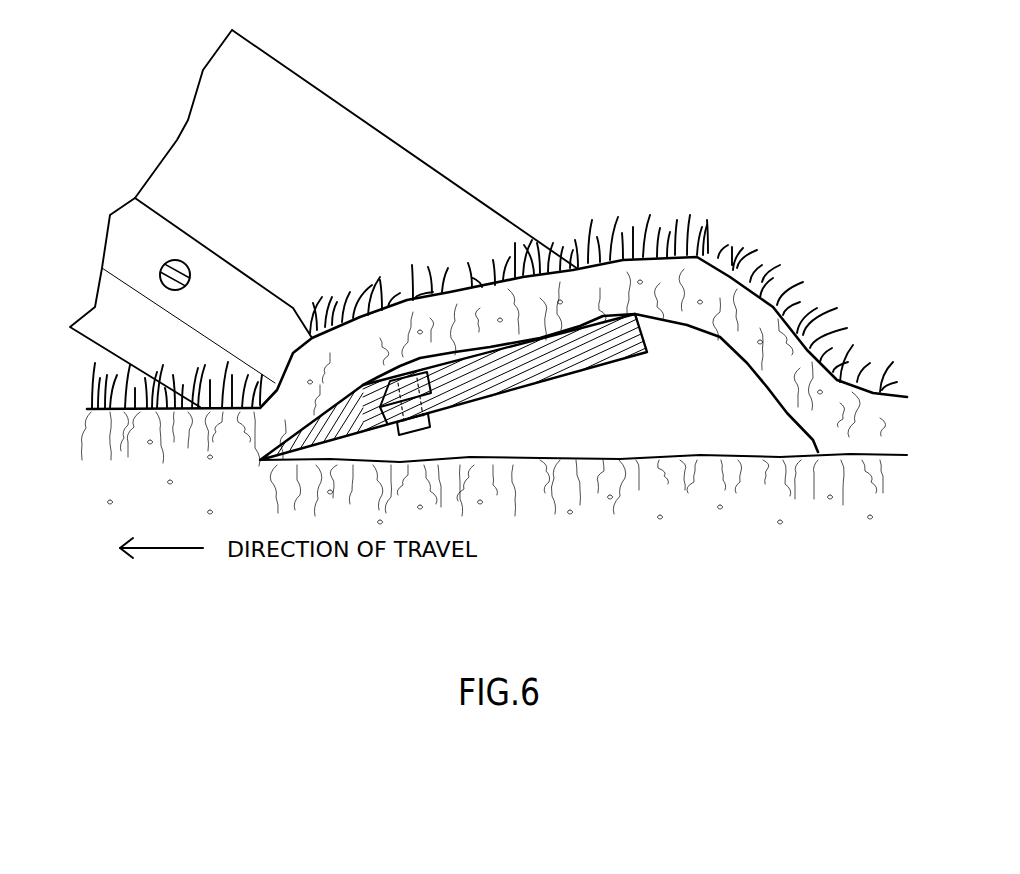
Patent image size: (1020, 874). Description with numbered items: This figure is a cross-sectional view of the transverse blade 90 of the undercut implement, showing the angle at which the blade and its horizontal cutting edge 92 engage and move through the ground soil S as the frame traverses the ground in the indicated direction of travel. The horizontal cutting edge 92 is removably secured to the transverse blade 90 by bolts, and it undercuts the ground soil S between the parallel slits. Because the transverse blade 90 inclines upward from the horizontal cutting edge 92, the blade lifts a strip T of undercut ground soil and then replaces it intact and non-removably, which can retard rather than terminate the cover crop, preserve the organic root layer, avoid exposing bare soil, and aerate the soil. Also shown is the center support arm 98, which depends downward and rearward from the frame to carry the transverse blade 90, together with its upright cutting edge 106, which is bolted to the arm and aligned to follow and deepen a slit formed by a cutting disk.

The center support arm 98 is at (300, 178).
The upright cutting edge 106 is at (193, 281).
The transverse blade 90 is at (540, 384).
The horizontal cutting edge 92 is at (348, 435).
The strip of undercut ground soil T is at (467, 334).
The ground soil S is at (172, 512).